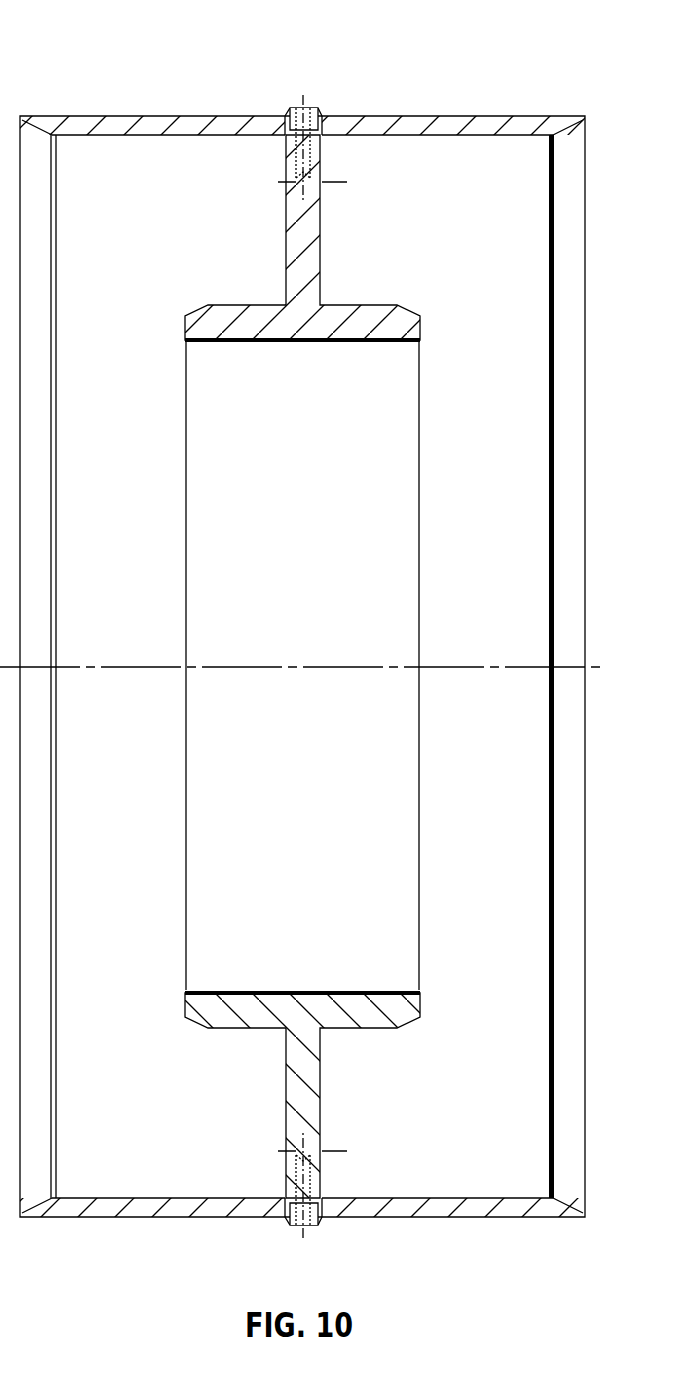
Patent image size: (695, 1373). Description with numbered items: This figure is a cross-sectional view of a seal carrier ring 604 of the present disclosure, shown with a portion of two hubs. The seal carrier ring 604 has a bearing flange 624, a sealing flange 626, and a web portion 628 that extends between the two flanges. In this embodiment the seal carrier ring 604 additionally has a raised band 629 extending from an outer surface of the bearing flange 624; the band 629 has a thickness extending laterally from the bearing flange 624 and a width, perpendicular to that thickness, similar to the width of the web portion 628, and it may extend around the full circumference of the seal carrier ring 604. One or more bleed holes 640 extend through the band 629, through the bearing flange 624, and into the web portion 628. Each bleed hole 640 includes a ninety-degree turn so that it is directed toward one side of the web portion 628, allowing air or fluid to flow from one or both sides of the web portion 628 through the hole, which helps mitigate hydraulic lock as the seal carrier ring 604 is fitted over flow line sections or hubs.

The seal carrier ring 604 is at (102, 40).
The bearing flange 624 is at (448, 117).
The sealing flange 626 is at (368, 305).
The web portion 628 is at (309, 666).
The raised band 629 is at (290, 110).
The bleed hole 640 is at (308, 112).